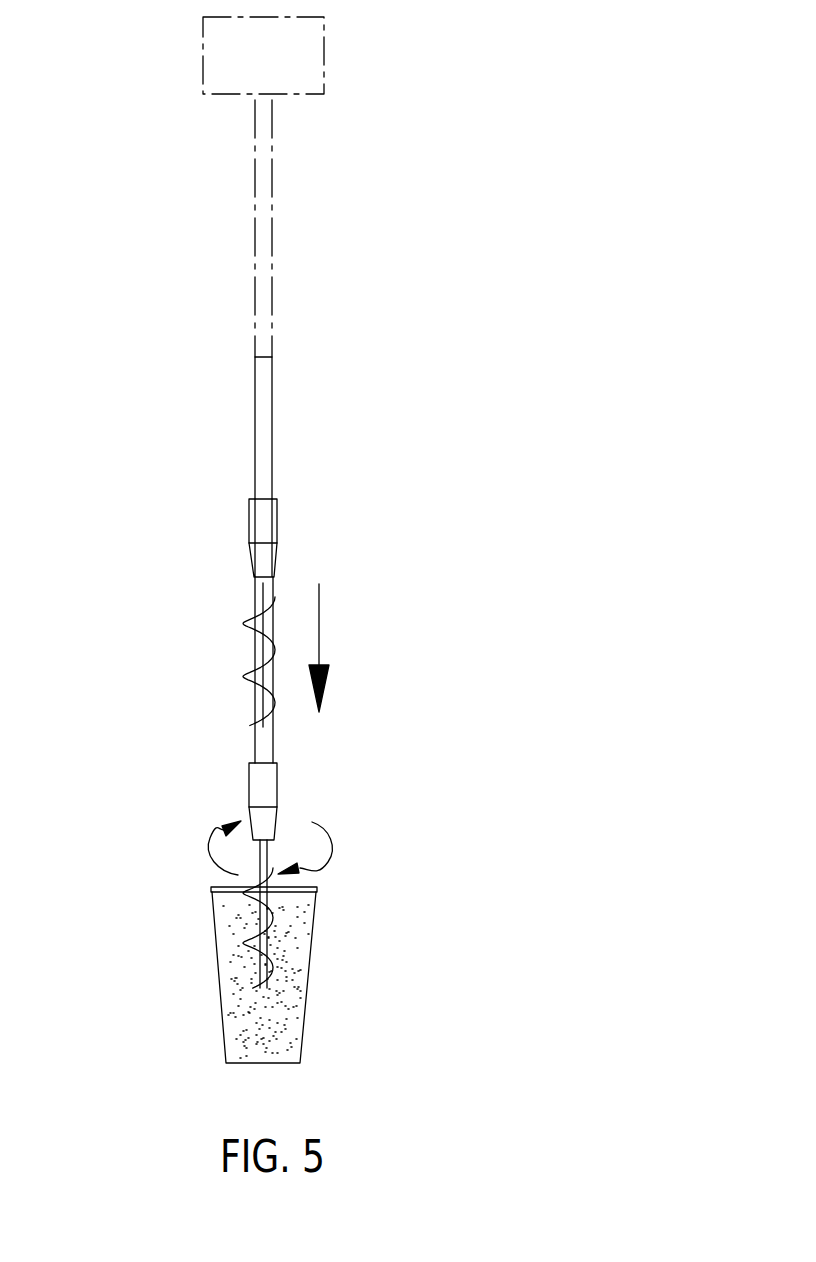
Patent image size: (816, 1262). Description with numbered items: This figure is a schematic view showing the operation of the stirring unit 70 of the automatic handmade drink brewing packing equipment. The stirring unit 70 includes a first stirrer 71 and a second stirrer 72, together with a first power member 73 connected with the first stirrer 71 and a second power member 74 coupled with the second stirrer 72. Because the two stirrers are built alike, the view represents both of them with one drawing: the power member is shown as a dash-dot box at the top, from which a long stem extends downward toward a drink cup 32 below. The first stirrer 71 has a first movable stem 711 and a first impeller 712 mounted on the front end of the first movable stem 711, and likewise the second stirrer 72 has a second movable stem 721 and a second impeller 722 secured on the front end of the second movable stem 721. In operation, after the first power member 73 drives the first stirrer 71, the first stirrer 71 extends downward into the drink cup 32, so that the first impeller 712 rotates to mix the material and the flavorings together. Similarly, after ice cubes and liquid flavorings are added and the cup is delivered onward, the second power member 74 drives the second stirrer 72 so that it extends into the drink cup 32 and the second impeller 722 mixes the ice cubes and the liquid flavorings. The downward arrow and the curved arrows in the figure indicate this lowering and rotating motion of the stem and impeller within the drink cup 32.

The stirring unit 70 is at (177, 389).
The first stirrer 71 is at (343, 467).
The second stirrer 72 is at (293, 473).
The first movable stem 711 is at (162, 708).
The second movable stem 721 is at (260, 743).
The first impeller 712 is at (175, 920).
The second impeller 722 is at (253, 900).
The first power member 73 is at (347, 55).
The second power member 74 is at (313, 68).
The drink cup 32 is at (293, 902).